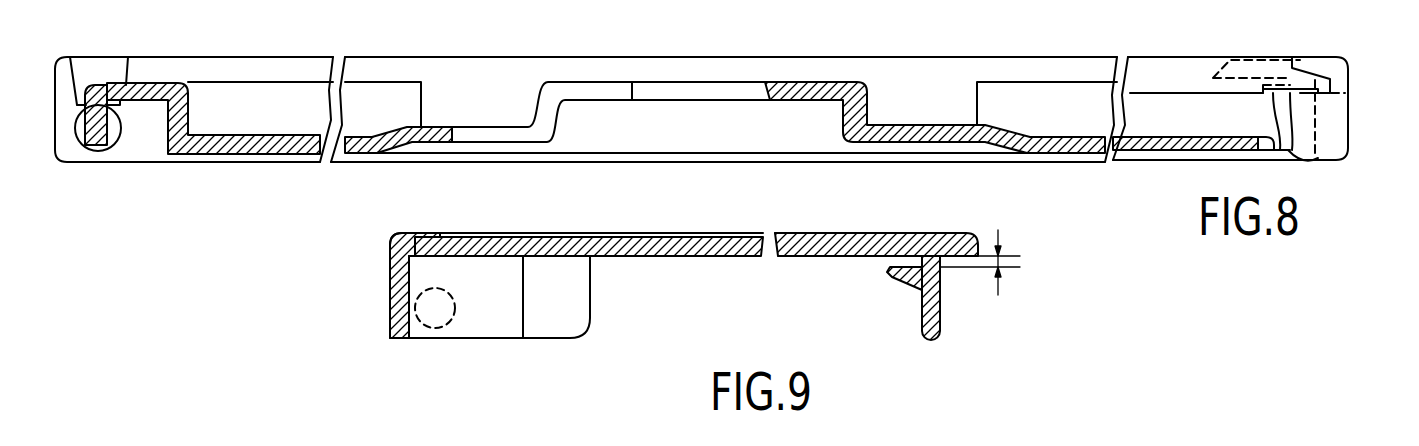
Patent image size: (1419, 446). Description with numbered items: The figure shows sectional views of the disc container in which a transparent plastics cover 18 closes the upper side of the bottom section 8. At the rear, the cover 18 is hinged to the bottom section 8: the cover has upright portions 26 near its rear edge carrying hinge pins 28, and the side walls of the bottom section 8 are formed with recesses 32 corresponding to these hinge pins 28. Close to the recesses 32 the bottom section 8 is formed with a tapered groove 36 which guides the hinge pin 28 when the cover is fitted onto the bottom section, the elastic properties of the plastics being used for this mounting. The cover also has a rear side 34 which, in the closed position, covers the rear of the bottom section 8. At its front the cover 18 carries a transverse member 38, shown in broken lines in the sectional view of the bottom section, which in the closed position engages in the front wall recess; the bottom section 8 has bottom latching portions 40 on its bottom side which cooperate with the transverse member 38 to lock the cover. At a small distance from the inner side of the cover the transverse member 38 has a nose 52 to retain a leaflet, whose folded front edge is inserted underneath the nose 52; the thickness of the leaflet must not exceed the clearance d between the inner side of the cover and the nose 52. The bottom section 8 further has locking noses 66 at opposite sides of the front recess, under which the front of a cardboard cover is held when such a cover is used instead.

In FIG. 8, the bottom section 8 is at (920, 56).
In FIG. 8, the cover 18 is at (1243, 72).
In FIG. 9, the cover 18 is at (695, 247).
In FIG. 9, the upright portions 26 is at (554, 320).
In FIG. 9, the hinge pins 28 is at (445, 322).
In FIG. 8, the recesses 32 is at (115, 132).
In FIG. 9, the side 34 is at (400, 291).
In FIG. 8, the tapered groove 36 is at (117, 63).
In FIG. 8, the transverse member 38 is at (1305, 100).
In FIG. 9, the transverse member 38 is at (938, 312).
In FIG. 8, the bottom latching portions 40 is at (1290, 126).
In FIG. 9, the nose 52 is at (893, 272).
In FIG. 8, the locking noses 66 is at (1322, 60).
In FIG. 9, the clearance d is at (998, 261).